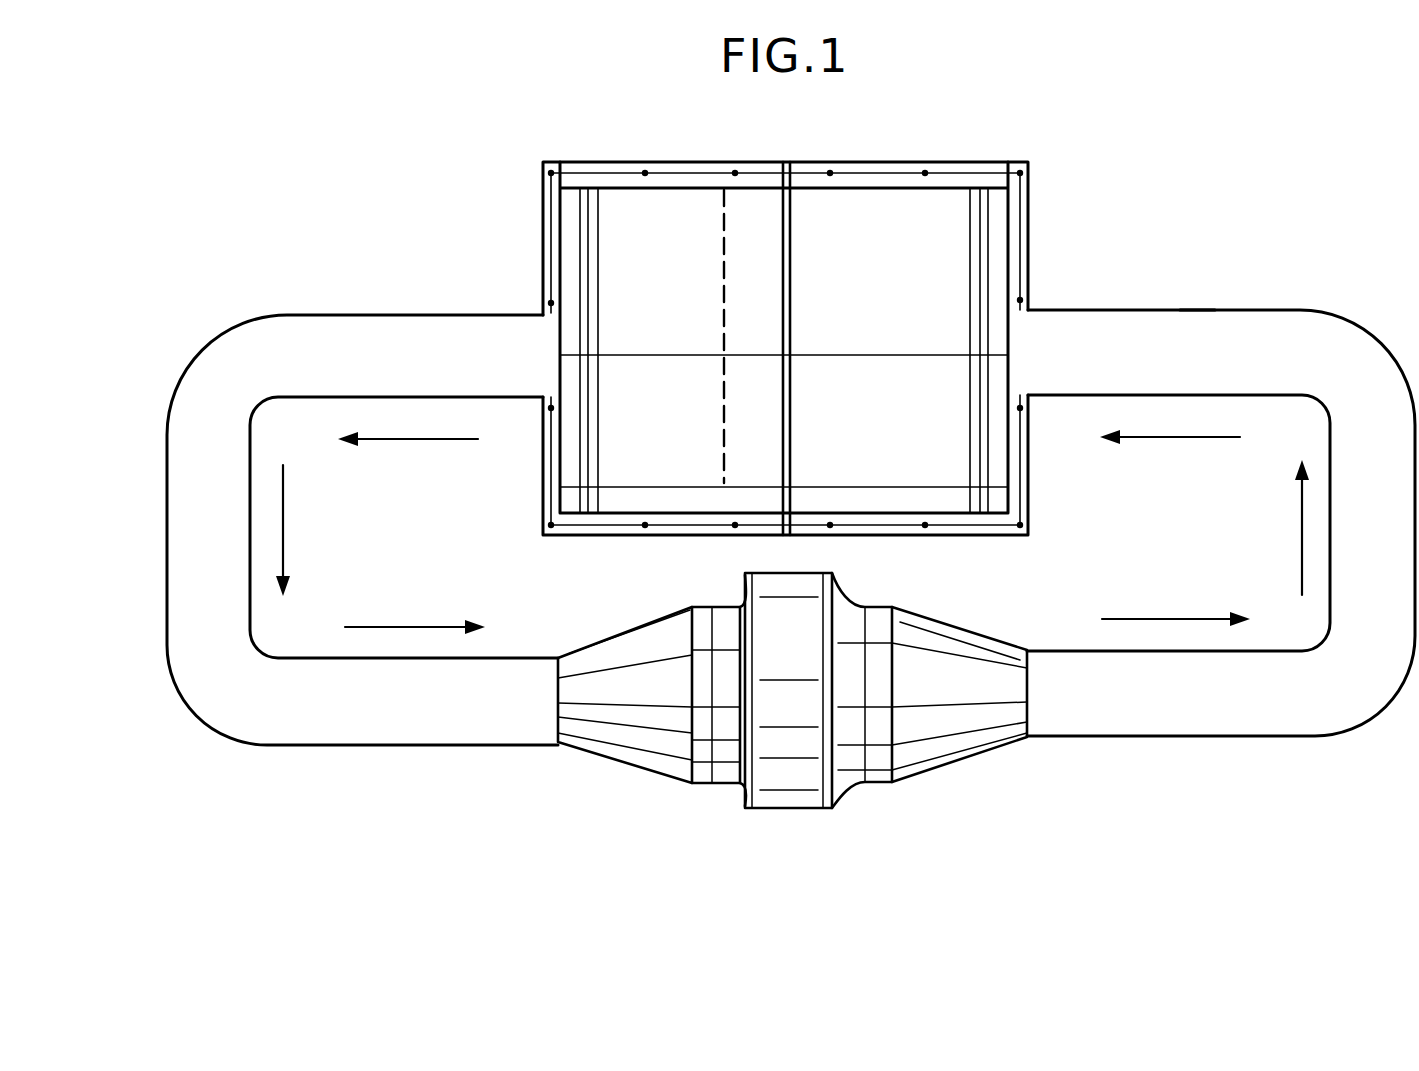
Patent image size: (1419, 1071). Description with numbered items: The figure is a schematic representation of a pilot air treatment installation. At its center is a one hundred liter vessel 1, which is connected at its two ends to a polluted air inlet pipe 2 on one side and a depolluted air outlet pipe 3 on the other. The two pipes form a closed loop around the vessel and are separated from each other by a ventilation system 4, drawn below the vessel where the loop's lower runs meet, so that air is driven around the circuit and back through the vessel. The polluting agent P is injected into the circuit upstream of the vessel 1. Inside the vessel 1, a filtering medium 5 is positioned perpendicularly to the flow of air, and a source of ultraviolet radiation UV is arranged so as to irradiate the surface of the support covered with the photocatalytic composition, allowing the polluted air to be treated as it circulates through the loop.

The vessel 1 is at (626, 162).
The polluted air inlet pipe 2 is at (1075, 338).
The depolluted air outlet pipe 3 is at (407, 355).
The ventilation system 4 is at (786, 745).
The filtering medium 5 is at (793, 332).
The source of ultraviolet radiation UV is at (721, 246).
The polluting agent P is at (1193, 308).